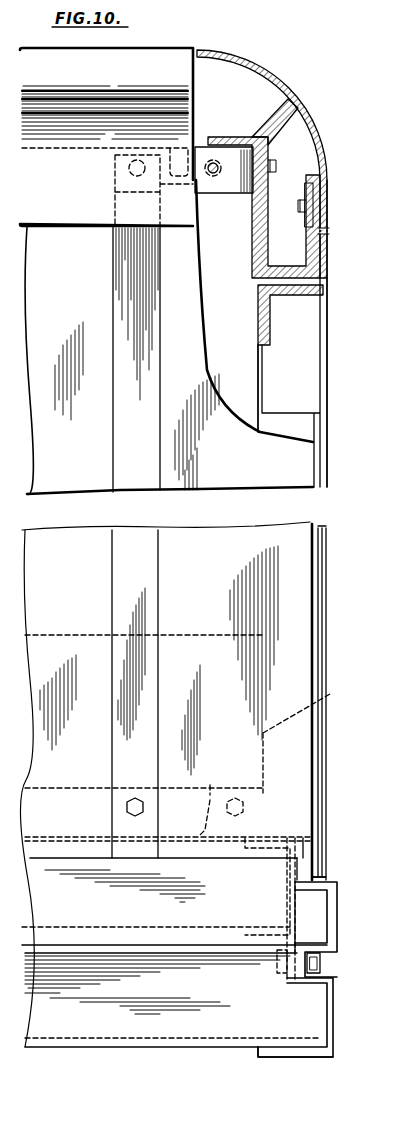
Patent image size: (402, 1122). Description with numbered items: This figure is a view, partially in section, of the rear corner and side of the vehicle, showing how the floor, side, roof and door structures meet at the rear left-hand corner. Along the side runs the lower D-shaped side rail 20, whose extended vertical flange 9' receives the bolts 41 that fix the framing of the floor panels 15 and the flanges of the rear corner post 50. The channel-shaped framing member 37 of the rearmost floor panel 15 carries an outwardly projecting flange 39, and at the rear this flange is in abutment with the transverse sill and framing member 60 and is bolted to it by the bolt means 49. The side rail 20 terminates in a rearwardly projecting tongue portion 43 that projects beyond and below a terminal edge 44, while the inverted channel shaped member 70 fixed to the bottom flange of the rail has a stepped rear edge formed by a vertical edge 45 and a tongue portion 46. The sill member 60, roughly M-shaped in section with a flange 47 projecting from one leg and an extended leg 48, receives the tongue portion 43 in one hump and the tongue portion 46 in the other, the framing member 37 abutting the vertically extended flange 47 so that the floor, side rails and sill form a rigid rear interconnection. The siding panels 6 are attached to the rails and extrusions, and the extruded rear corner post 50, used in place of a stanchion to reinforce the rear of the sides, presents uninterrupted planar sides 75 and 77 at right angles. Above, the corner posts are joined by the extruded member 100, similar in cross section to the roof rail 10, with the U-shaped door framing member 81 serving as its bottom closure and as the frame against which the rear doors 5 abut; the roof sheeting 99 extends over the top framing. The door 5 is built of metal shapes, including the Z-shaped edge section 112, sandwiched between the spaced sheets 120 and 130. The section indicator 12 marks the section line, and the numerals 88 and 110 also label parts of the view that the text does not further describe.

The rear door 5 is at (330, 360).
The siding panel 6 is at (62, 581).
The vertical flange 9' is at (305, 734).
The roof rail 10 is at (395, 267).
The section indicator 12 is at (401, 145).
The floor panel 15 is at (330, 795).
The side rail 20 is at (95, 906).
The framing member 37 is at (292, 878).
The outwardly projecting flange 39 is at (290, 985).
The bolt 41 is at (143, 807).
The tongue portion 43 is at (318, 935).
The terminal edge 44 is at (325, 878).
The vertical edge 45 is at (321, 973).
The tongue portion 46 is at (315, 1016).
The flange 47 is at (303, 842).
The extended leg 48 is at (310, 1058).
The bolt means 49 is at (280, 968).
The rear corner post 50 is at (328, 614).
The transverse sill and framing member 60 is at (338, 918).
The inverted channel shaped member 70 is at (225, 989).
The planar side 75 is at (206, 573).
The planar side 77 is at (394, 647).
The door framing member 81 is at (268, 217).
The bracket 88 is at (222, 193).
The roof sheeting 99 is at (66, 189).
The extruded member 100 is at (262, 122).
The hatched member 110 is at (323, 291).
The Z-shaped section 112 is at (320, 253).
The inner sheet 120 is at (257, 388).
The outer sheet 130 is at (328, 388).